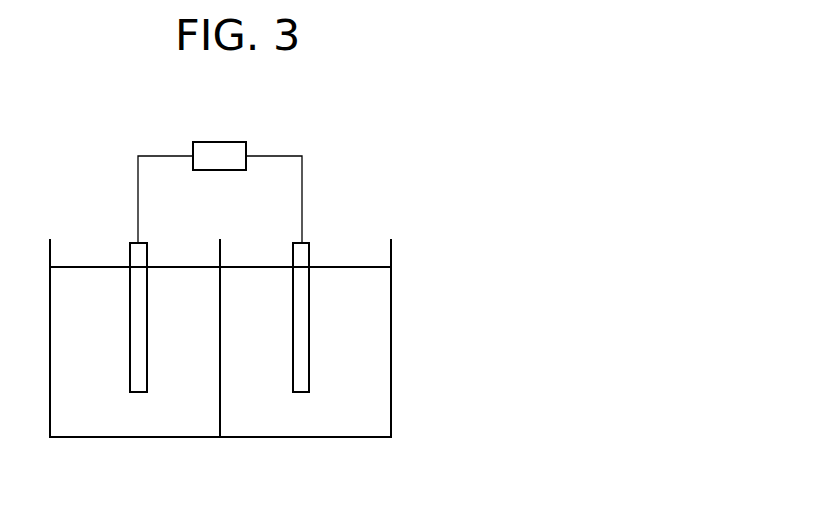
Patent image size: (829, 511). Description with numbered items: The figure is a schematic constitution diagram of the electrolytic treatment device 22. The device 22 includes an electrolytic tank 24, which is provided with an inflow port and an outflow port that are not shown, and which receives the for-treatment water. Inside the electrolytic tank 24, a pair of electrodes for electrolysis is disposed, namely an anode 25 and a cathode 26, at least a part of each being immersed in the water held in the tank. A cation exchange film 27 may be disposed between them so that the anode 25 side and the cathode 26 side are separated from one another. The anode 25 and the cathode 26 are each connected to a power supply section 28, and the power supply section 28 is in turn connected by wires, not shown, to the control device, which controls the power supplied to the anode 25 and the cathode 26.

The electrolytic treatment device 22 is at (427, 143).
The electrolytic tank 24 is at (391, 337).
The anode 25 is at (130, 250).
The cathode 26 is at (309, 250).
The cation exchange film 27 is at (222, 401).
The power supply section 28 is at (222, 141).